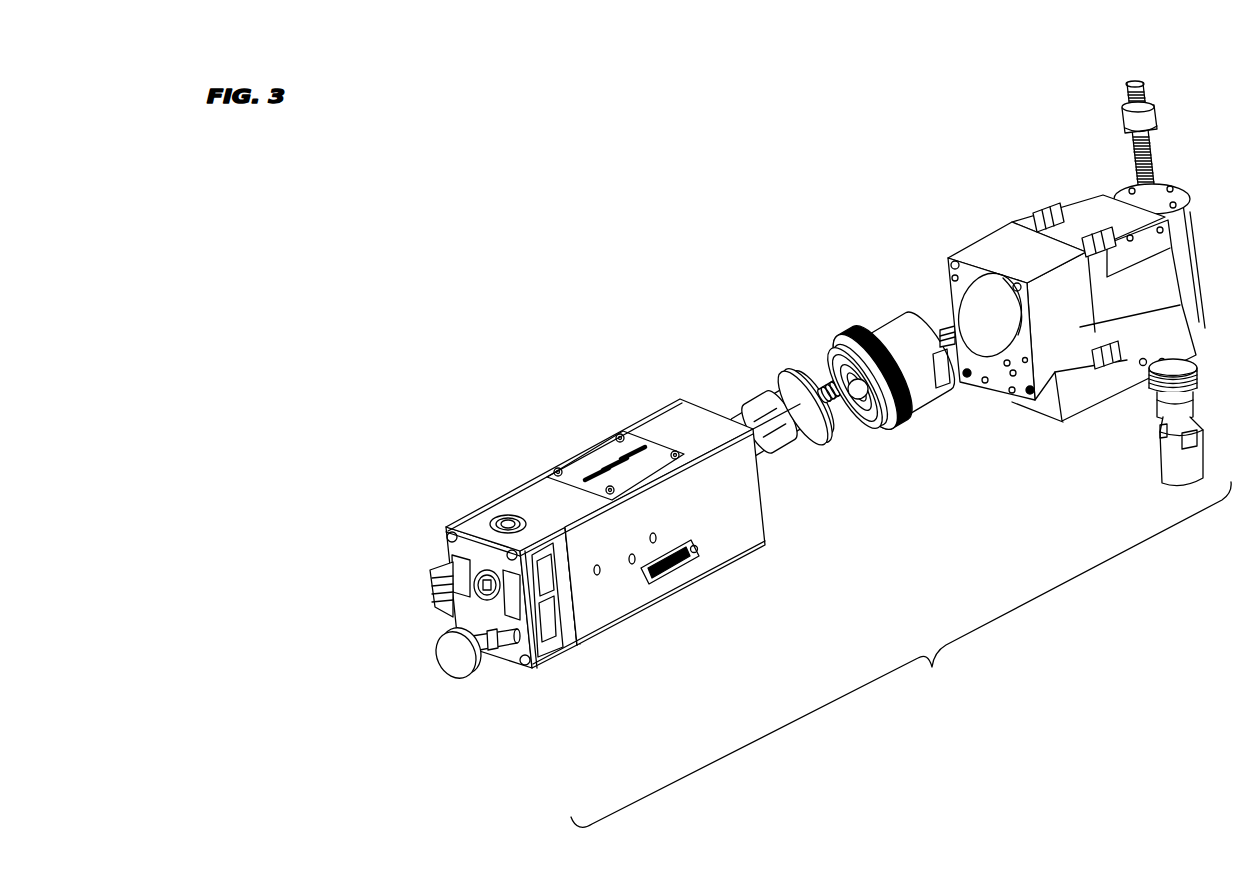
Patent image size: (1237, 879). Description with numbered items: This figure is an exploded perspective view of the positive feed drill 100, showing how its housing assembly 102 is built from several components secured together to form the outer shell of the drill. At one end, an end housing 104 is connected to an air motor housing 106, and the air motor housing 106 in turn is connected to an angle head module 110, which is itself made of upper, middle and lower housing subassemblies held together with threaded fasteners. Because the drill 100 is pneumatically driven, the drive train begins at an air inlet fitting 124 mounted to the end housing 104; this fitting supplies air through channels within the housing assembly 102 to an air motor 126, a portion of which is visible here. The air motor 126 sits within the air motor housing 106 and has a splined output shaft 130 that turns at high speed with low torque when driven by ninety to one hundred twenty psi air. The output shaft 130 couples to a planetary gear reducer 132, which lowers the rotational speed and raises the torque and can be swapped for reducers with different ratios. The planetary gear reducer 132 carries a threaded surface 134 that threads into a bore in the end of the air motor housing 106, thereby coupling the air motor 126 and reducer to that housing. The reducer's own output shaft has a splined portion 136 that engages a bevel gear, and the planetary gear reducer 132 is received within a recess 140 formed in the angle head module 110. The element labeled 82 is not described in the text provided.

The connector 82 is at (1160, 483).
The positive feed drill 100 is at (604, 232).
The housing assembly 102 is at (901, 654).
The end housing 104 is at (472, 502).
The air motor housing 106 is at (556, 458).
The angle head module 110 is at (977, 243).
The air inlet fitting 124 is at (432, 567).
The air motor 126 is at (772, 387).
The output shaft 130 is at (853, 418).
The planetary gear reducer 132 is at (847, 333).
The threaded surface 134 is at (835, 345).
The splined portion 136 is at (946, 328).
The recess 140 is at (968, 295).